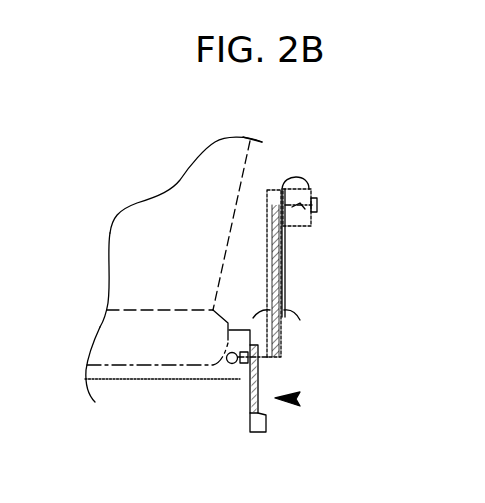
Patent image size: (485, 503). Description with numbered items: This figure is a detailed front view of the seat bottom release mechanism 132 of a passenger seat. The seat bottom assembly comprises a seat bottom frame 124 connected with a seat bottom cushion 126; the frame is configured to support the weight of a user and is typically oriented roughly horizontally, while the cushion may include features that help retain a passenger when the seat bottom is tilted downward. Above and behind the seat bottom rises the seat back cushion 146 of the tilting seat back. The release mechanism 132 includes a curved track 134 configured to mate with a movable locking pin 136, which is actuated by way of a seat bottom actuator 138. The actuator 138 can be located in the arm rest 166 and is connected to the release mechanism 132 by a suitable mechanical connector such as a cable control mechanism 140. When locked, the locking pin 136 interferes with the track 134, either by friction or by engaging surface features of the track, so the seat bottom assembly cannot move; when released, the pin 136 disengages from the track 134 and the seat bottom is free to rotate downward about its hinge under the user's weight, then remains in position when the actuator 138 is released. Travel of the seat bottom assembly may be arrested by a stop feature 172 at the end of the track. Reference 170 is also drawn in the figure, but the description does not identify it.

The seat bottom frame 124 is at (160, 372).
The seat bottom cushion 126 is at (192, 310).
The seat bottom release mechanism 132 is at (299, 403).
The curved track 134 is at (249, 412).
The locking pin 136 is at (267, 357).
The seat bottom actuator 138 is at (318, 205).
The cable control mechanism 140 is at (310, 193).
The seat back cushion 146 is at (167, 198).
The arm rest 166 is at (293, 183).
The bracket surface 170 is at (258, 368).
The stop feature 172 is at (266, 424).